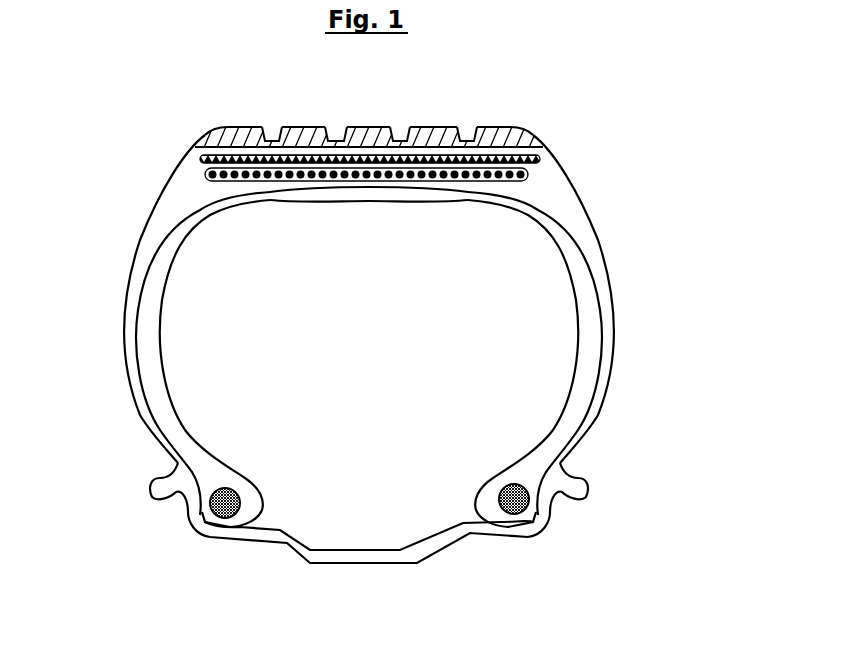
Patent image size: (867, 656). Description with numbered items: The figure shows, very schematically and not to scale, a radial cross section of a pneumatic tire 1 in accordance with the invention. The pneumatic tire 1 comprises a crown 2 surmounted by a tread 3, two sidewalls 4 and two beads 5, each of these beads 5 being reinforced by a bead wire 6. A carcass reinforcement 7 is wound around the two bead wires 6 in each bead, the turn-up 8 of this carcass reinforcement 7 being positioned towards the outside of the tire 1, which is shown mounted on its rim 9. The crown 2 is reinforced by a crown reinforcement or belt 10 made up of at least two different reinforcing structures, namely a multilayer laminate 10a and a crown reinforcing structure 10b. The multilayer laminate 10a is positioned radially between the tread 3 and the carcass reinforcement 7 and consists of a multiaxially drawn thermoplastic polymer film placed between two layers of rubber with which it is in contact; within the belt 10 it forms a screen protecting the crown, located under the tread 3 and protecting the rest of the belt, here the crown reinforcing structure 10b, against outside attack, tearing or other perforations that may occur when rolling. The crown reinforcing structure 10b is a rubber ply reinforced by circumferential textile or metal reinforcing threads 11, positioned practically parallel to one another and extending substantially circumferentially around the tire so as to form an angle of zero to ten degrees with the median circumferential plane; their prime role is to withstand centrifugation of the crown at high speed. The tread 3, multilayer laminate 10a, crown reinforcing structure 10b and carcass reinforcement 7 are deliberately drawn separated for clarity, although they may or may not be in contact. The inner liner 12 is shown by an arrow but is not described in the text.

The pneumatic tire 1 is at (634, 266).
The crown 2 is at (563, 144).
The tread 3 is at (357, 140).
The sidewalls 4 is at (128, 330).
The beads 5 is at (247, 517).
The bead wire 6 is at (236, 502).
The carcass reinforcement 7 is at (143, 272).
The turn-up 8 is at (170, 453).
The rim 9 is at (192, 510).
The belt 10 is at (528, 174).
The multilayer laminate 10a is at (200, 159).
The crown reinforcing structure 10b is at (208, 176).
The reinforcing threads 11 is at (382, 172).
The inner liner 12 is at (169, 378).